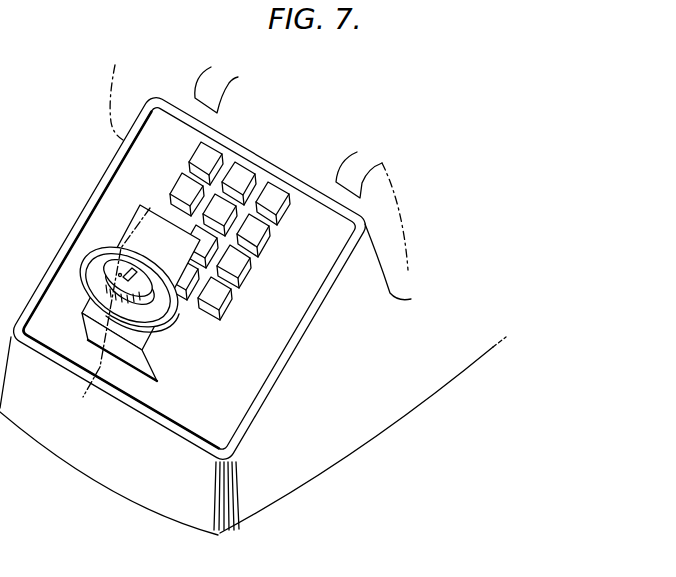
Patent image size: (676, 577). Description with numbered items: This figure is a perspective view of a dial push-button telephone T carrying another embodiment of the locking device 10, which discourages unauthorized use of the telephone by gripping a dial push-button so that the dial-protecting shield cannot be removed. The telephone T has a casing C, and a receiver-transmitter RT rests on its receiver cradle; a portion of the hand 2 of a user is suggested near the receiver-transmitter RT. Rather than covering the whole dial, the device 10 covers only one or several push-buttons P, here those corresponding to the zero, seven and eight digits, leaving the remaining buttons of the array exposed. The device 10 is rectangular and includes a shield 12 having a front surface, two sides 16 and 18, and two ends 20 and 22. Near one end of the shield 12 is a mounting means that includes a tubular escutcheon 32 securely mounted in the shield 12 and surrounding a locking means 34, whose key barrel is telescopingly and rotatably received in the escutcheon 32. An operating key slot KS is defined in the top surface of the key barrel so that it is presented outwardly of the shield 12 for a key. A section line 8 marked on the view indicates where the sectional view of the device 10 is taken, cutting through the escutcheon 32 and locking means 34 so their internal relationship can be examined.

The locking device 10 is at (110, 221).
The shield 12 is at (170, 352).
The side 16 is at (192, 303).
The side 18 is at (130, 210).
The end 20 is at (94, 268).
The end 22 is at (133, 358).
The tubular escutcheon 32 is at (84, 346).
The locking means 34 is at (88, 310).
The operating key slot KS is at (123, 275).
The push key P is at (258, 262).
The receiver-transmitter RT is at (111, 89).
The hand 2 is at (8, 191).
The casing C is at (348, 423).
The dial push-button telephone T is at (297, 470).
The section line 8- 8 is at (152, 214).